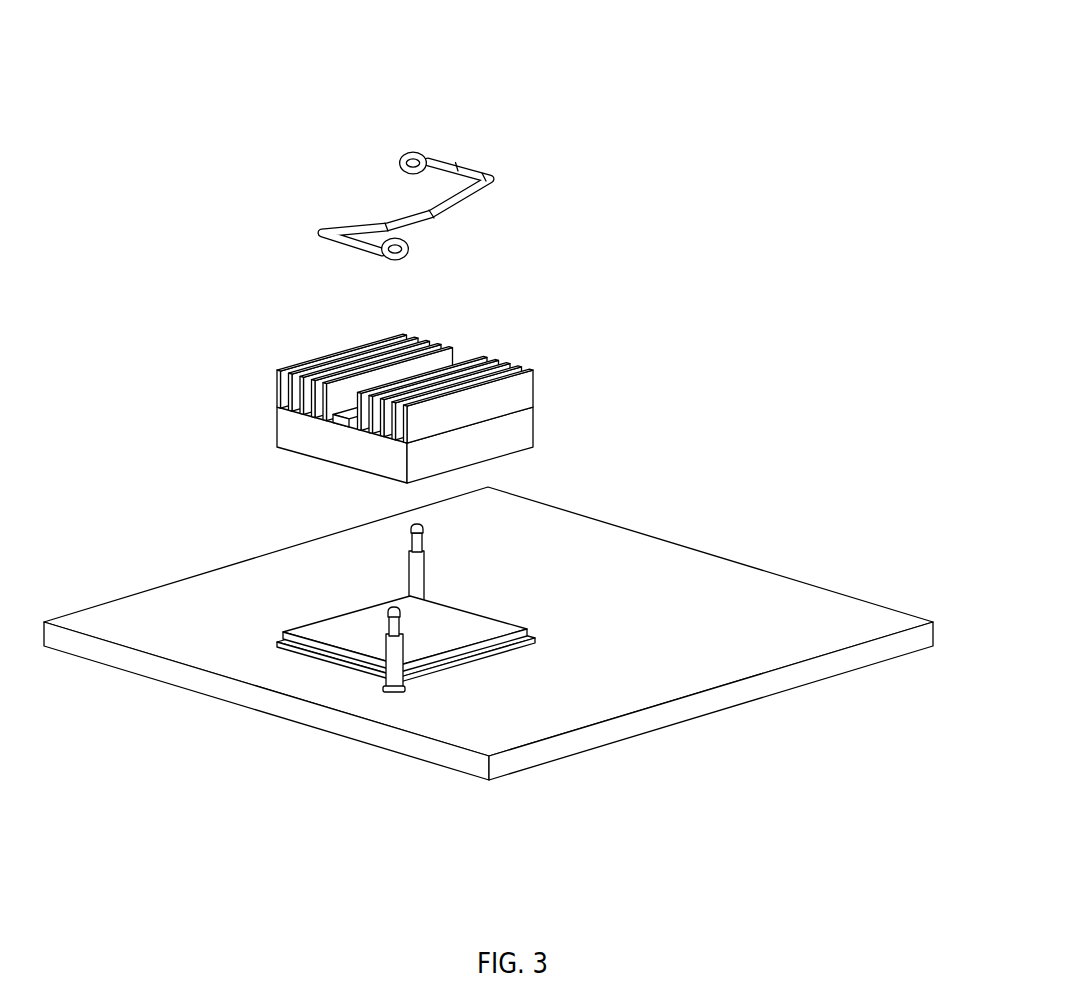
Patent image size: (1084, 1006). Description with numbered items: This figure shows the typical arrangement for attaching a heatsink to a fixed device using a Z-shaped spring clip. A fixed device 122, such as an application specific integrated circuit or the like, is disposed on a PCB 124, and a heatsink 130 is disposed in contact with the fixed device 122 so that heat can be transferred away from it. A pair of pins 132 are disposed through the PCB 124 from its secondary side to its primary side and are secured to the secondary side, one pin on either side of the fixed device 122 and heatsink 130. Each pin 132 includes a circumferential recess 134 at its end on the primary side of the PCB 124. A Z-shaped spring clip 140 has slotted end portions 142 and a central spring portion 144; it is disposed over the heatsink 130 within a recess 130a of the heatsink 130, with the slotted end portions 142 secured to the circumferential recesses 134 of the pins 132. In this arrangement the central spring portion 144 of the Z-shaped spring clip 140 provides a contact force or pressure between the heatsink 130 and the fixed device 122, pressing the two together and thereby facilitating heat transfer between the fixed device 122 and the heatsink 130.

The fixed device 122 is at (493, 617).
The PCB 124 is at (837, 688).
The heatsink 130 is at (452, 370).
The recess of the heatsink 130a is at (357, 385).
The pins 132 is at (403, 660).
The circumferential recess 134 is at (378, 613).
The Z-shaped spring clip 140 is at (490, 167).
The slotted end portions 142 is at (405, 148).
The central spring portion 144 is at (392, 208).